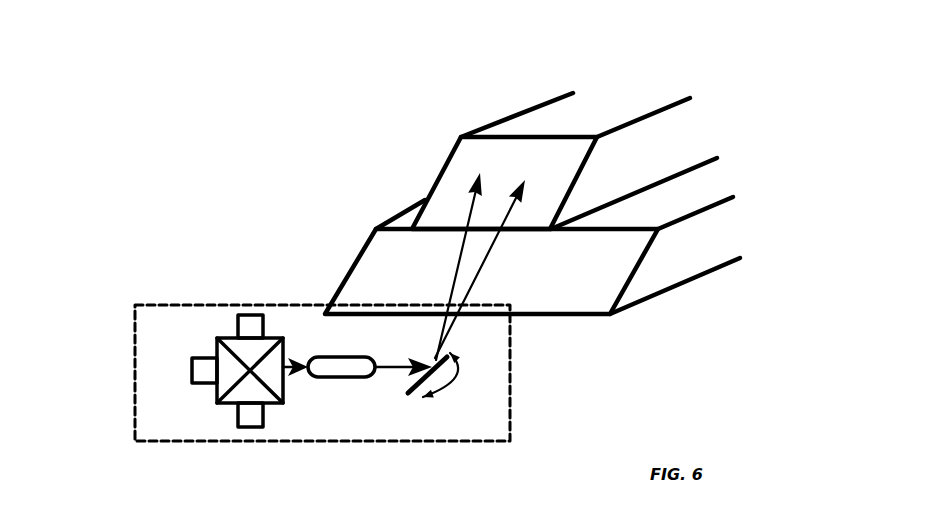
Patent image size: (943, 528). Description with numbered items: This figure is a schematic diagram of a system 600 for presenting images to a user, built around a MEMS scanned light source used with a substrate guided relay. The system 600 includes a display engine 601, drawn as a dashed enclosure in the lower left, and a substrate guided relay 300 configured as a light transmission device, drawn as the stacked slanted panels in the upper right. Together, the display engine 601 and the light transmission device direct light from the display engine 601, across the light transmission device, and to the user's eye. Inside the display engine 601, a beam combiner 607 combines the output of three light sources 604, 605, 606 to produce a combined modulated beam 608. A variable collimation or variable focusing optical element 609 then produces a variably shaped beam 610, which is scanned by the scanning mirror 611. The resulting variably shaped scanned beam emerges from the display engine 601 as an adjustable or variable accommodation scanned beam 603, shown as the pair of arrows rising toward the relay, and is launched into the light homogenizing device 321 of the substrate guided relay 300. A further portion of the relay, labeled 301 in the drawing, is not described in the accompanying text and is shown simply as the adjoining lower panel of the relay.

The substrate guided relay 300 is at (532, 193).
The light homogenizing device 321 is at (552, 120).
The lower reflective surface of target 301 is at (657, 268).
The variable accommodation scanned beam 603 is at (480, 270).
The system 600 is at (319, 373).
The display engine 601 is at (510, 410).
The light source 604 is at (245, 320).
The light source 605 is at (198, 370).
The light source 606 is at (252, 427).
The beam combiner 607 is at (282, 393).
The combined modulated beam 608 is at (300, 378).
The variable focusing optical element 609 is at (343, 370).
The variably shaped beam 610 is at (390, 370).
The scanning mirror 611 is at (443, 346).